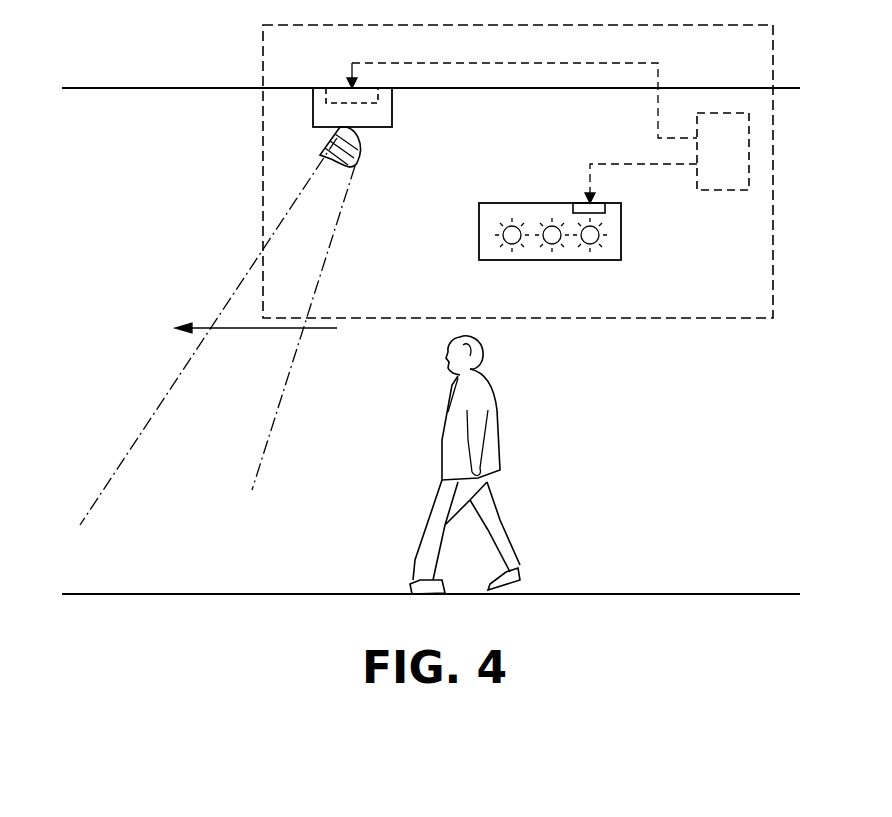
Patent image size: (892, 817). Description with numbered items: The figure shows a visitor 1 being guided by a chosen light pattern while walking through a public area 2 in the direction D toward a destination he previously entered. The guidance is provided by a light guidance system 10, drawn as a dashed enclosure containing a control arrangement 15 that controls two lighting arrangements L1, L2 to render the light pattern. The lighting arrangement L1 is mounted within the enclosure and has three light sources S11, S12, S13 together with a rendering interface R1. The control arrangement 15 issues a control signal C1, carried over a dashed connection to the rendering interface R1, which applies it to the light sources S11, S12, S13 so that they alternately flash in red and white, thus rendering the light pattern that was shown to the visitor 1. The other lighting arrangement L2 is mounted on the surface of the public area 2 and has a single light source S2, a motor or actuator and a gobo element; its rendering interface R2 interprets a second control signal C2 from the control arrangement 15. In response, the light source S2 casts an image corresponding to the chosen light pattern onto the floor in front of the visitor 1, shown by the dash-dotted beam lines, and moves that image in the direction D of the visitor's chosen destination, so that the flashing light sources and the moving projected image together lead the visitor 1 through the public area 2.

The visitor 1 is at (497, 446).
The public area 2 is at (167, 199).
The light guidance system 10 is at (683, 320).
The control arrangement 15 is at (736, 164).
The lighting arrangement L1 is at (621, 228).
The lighting arrangement L2 is at (392, 108).
The rendering interface R1 is at (580, 200).
The rendering interface R2 is at (336, 86).
The control signal C1 is at (597, 163).
The control signal C2 is at (660, 74).
The light source S11 is at (511, 242).
The light source S12 is at (552, 242).
The light source S13 is at (592, 242).
The light source S2 is at (360, 147).
The direction D is at (258, 331).